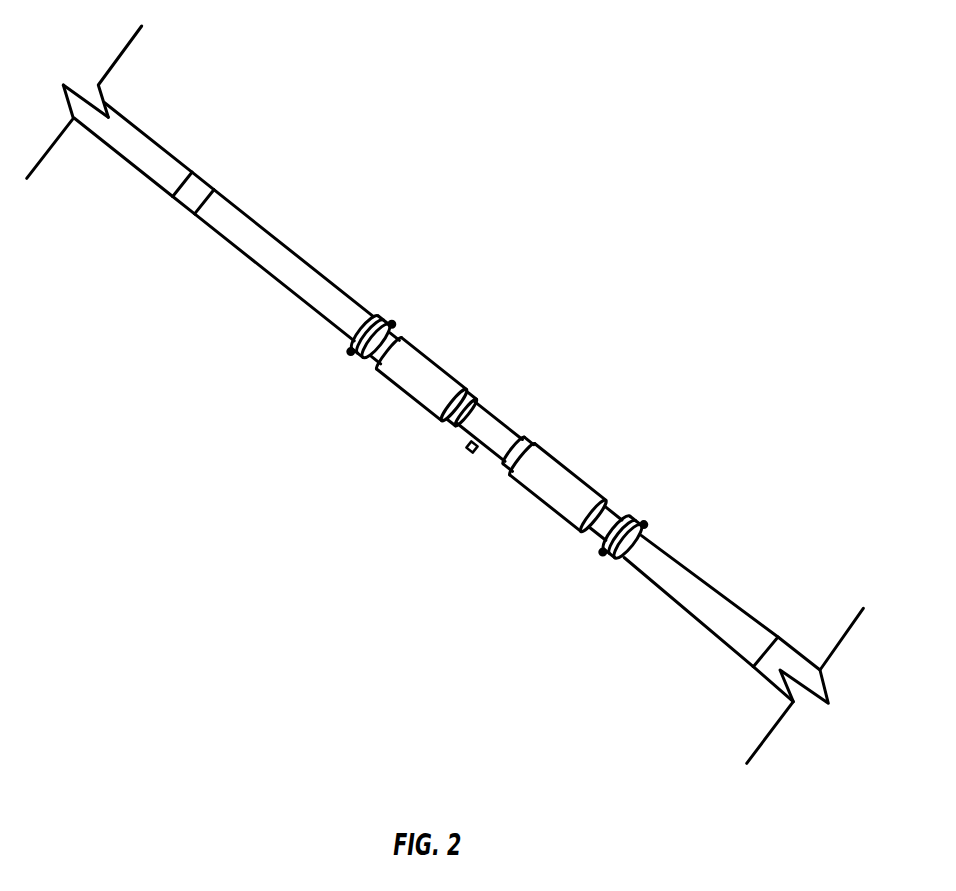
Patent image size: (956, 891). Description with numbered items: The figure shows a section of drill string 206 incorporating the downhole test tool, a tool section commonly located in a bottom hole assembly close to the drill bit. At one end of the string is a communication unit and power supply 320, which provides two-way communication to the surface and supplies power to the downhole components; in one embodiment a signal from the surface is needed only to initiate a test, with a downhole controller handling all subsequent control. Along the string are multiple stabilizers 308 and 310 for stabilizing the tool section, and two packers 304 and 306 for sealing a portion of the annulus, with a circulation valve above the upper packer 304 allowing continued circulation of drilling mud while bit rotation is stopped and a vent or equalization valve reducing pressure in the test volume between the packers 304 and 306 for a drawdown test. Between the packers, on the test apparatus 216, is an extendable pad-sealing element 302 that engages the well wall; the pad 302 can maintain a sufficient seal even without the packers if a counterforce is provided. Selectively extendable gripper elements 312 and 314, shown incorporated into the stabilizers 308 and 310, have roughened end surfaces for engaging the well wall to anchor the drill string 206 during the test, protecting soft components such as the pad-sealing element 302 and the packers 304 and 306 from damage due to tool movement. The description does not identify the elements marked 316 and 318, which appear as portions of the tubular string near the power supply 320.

The drill string 206 is at (132, 388).
The test apparatus 216 is at (507, 418).
The pad-sealing element 302 is at (467, 450).
The upper packer 304 is at (452, 367).
The lower packer 306 is at (580, 472).
The stabilizer 308 is at (373, 317).
The stabilizer 310 is at (625, 522).
The gripper element 312 is at (388, 308).
The gripper element 314 is at (640, 517).
The proximal tube 316 is at (263, 223).
The marker band 318 is at (207, 180).
The communication unit and power supply 320 is at (148, 127).